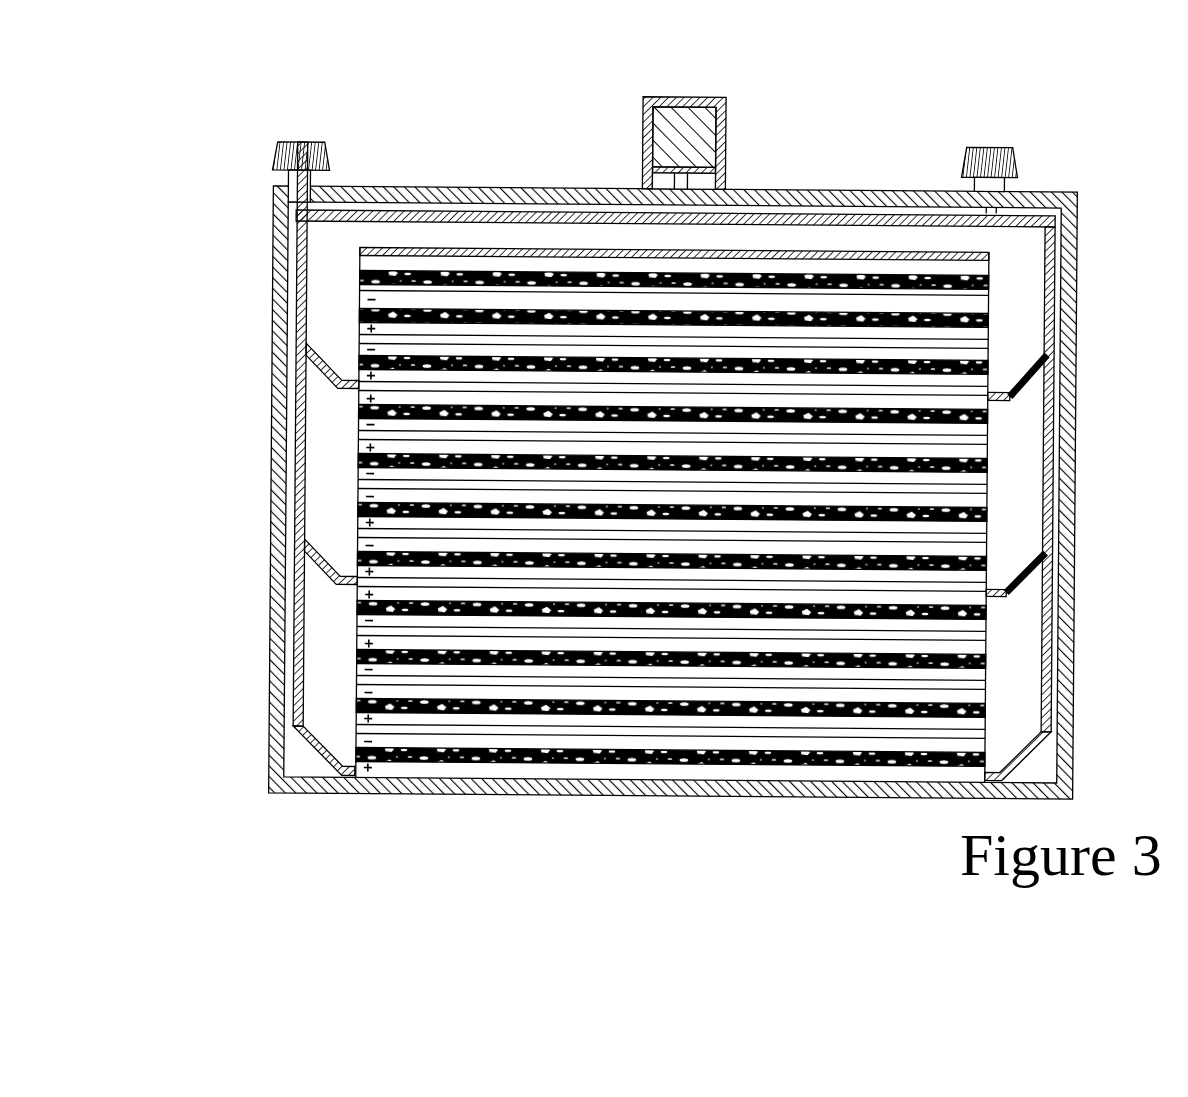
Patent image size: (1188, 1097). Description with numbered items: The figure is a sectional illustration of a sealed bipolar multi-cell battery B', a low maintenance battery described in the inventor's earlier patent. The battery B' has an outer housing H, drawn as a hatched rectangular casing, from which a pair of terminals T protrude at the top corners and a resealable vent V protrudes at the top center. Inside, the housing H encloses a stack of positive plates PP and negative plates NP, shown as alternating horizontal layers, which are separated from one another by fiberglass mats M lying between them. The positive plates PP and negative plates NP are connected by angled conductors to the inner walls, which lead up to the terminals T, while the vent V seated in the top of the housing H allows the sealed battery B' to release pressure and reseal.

The housing H is at (270, 462).
The terminals T is at (318, 143).
The sealed bipolar multi-cell battery B' is at (674, 417).
The resealable vent V is at (738, 128).
The fiberglass mats M is at (988, 318).
The positive plates PP is at (1017, 394).
The negative plates NP is at (357, 680).